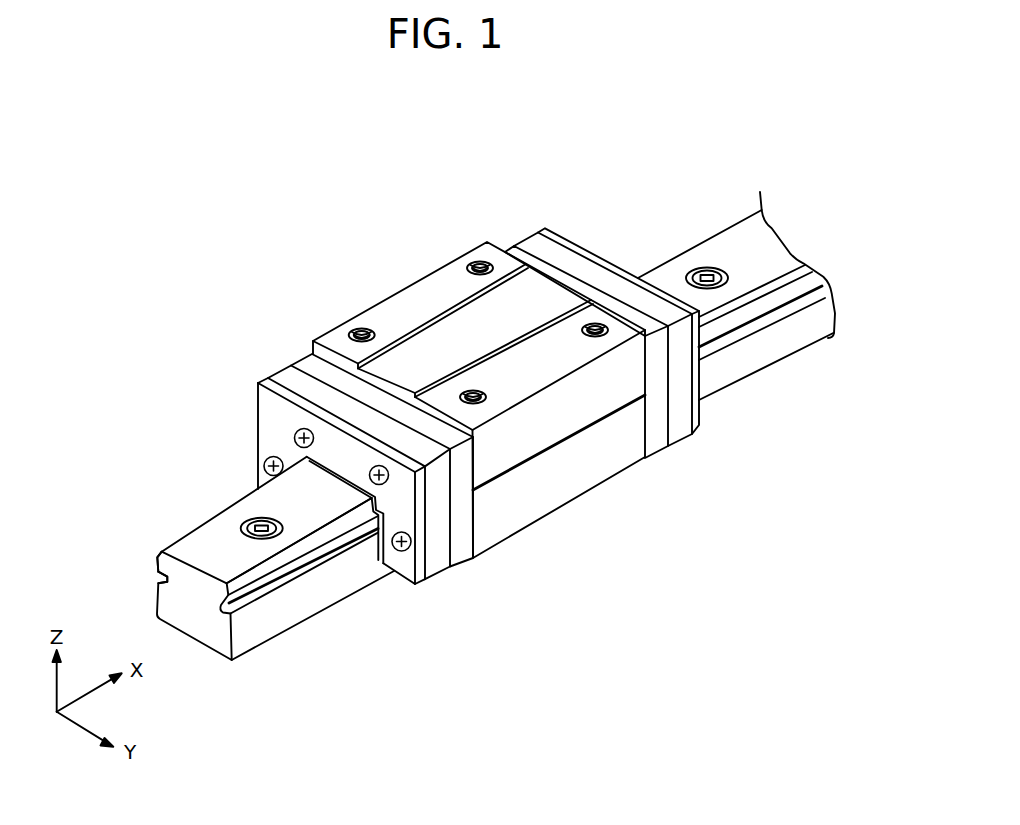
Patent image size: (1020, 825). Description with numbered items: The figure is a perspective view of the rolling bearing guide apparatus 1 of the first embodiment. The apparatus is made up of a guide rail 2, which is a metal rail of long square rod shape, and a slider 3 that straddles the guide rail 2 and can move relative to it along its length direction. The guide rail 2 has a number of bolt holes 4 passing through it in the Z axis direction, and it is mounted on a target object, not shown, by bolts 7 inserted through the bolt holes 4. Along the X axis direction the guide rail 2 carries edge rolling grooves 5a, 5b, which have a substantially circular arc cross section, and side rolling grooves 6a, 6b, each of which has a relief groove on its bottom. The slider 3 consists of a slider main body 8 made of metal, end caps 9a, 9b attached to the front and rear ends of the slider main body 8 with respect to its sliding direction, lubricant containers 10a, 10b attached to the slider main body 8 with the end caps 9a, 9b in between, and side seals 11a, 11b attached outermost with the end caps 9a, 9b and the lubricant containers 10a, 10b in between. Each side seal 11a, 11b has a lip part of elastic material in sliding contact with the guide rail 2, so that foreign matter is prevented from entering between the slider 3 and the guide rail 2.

The rolling bearing guide apparatus 1 is at (333, 208).
The guide rail 2 is at (200, 548).
The slider 3 is at (401, 270).
The bolt hole 4 is at (248, 520).
The edge rolling groove 5a is at (161, 551).
The edge rolling groove 5b is at (309, 545).
The side rolling groove 6a is at (160, 577).
The side rolling groove 6b is at (277, 589).
The bolt 7 is at (262, 527).
The slider main body 8 is at (443, 290).
The end cap 9a is at (310, 366).
The end cap 9b is at (515, 252).
The lubricant container 10a is at (288, 382).
The lubricant container 10b is at (548, 241).
The side seal 11a is at (275, 430).
The side seal 11b is at (575, 216).